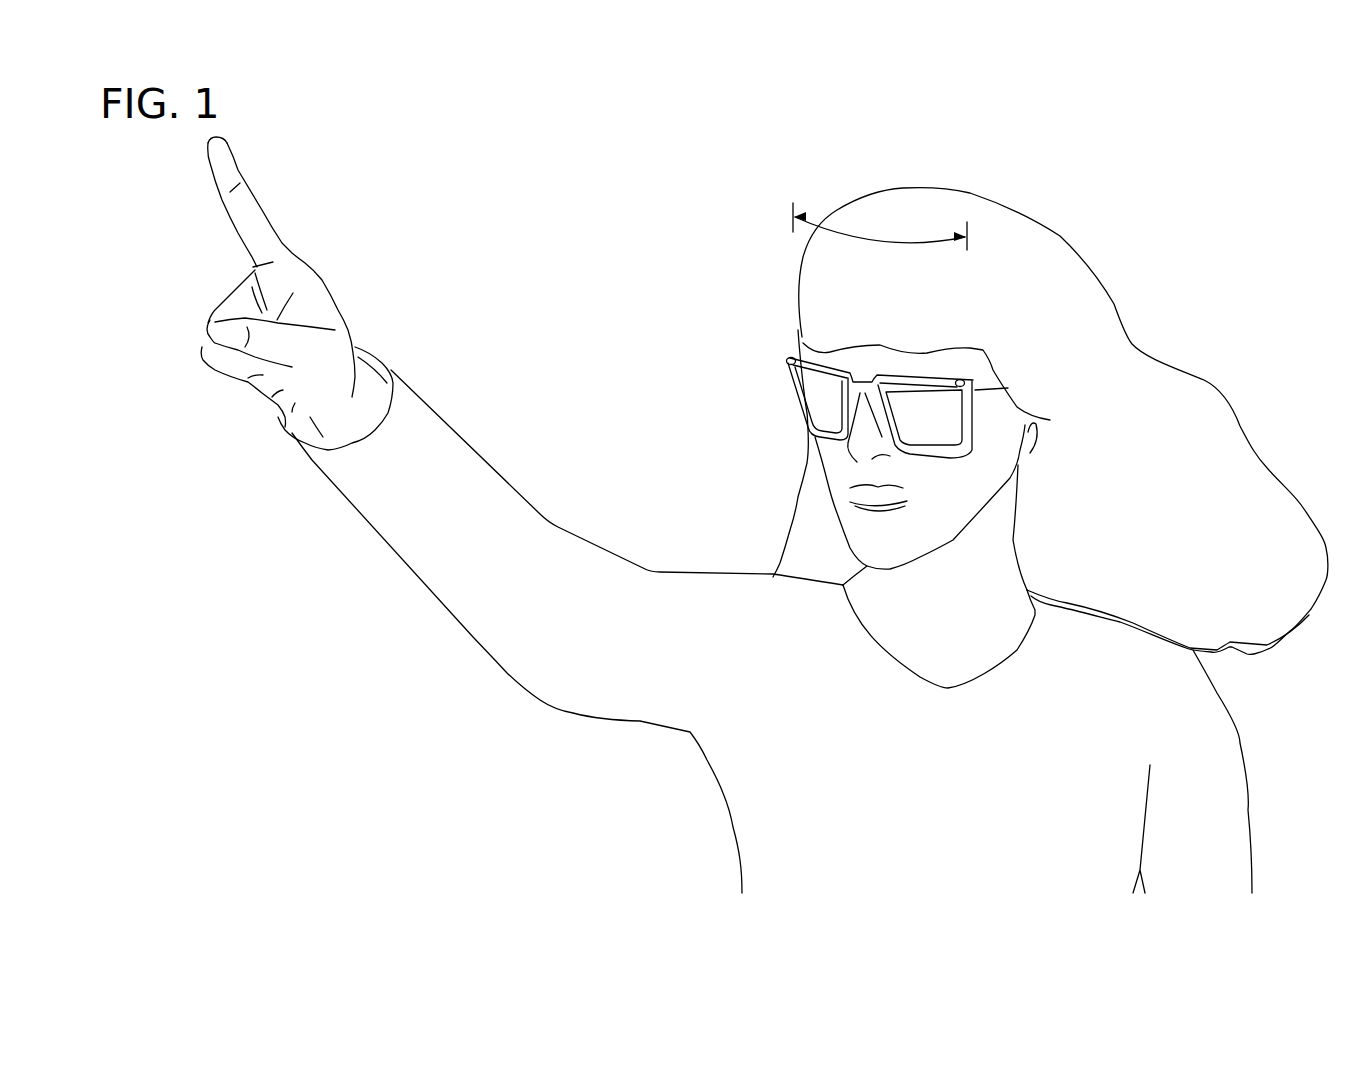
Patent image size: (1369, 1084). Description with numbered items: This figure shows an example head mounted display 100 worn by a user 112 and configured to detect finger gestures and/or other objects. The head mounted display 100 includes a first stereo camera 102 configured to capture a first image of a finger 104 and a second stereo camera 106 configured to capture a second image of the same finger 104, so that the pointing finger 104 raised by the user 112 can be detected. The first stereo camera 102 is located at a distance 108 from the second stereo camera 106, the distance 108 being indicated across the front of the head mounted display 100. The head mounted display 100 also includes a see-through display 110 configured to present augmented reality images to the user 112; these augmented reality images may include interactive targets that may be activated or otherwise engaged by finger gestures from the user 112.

The head mounted display 100 is at (887, 387).
The first stereo camera 102 is at (983, 385).
The finger 104 is at (232, 167).
The second stereo camera 106 is at (777, 356).
The distance 108 is at (889, 222).
The see-through display 110 is at (832, 417).
The user 112 is at (832, 313).